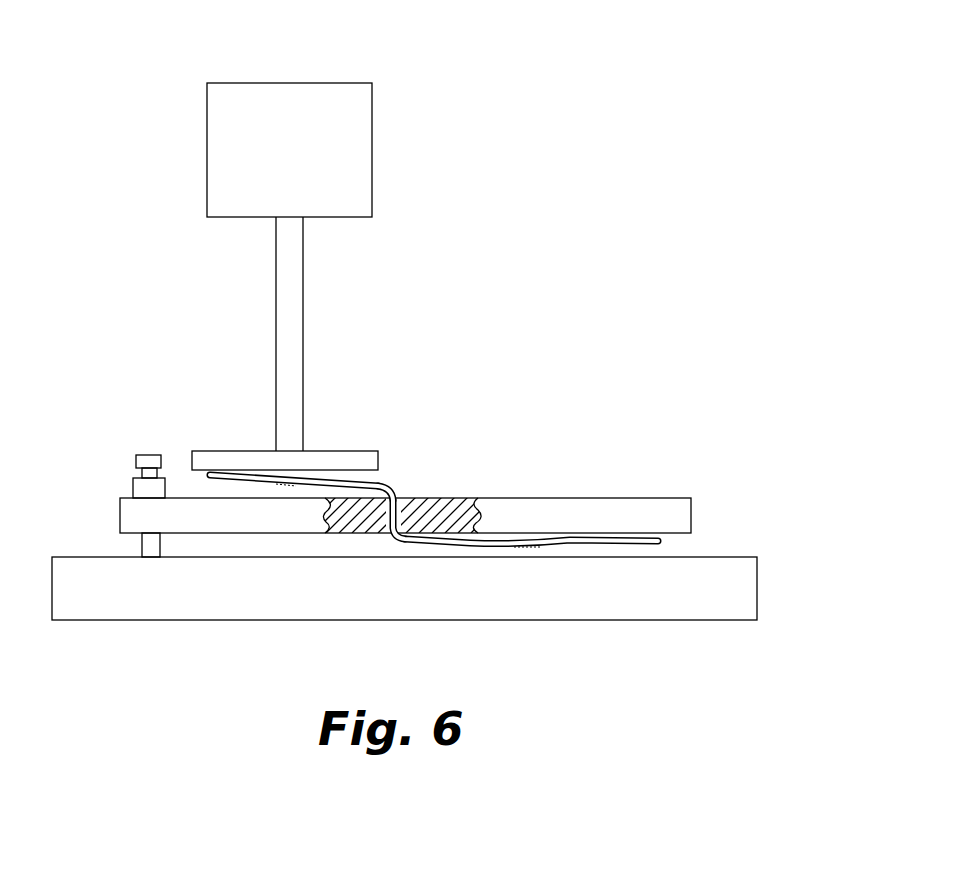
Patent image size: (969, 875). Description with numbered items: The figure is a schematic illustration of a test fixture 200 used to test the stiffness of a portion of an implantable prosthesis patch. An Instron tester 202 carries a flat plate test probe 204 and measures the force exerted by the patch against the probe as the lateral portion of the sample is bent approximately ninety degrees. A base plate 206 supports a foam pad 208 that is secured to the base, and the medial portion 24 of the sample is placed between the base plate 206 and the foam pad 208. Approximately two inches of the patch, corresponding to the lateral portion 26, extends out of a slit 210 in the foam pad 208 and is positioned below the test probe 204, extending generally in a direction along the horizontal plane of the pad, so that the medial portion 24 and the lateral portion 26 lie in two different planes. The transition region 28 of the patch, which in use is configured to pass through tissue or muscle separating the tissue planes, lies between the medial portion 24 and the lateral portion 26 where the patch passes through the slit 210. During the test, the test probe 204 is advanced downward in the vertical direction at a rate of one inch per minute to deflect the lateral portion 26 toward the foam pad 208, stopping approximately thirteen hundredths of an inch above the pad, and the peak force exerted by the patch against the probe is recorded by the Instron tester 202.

The test fixture 200 is at (543, 190).
The Instron tester 202 is at (372, 108).
The flat plate test probe 204 is at (208, 450).
The base plate 206 is at (758, 568).
The foam pad 208 is at (692, 510).
The slit 210 is at (389, 532).
The medial portion 24 is at (592, 553).
The lateral portion 26 is at (262, 486).
The transition region 28 is at (392, 481).